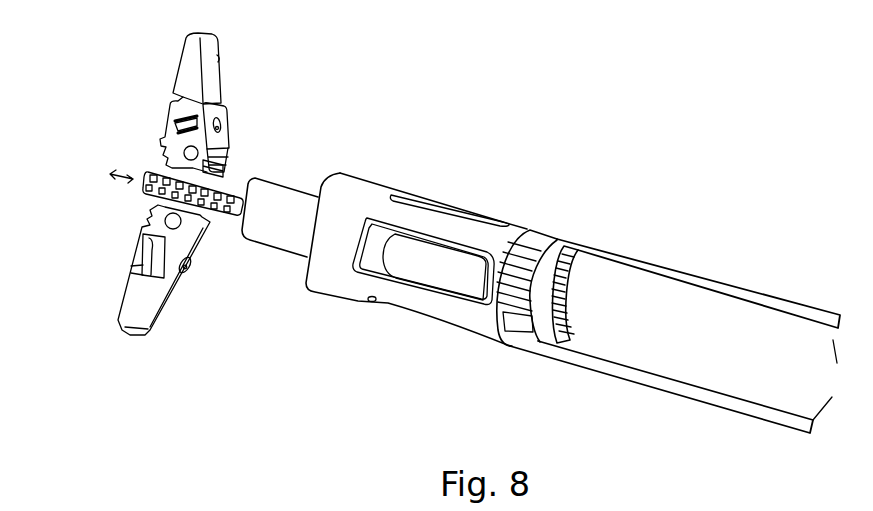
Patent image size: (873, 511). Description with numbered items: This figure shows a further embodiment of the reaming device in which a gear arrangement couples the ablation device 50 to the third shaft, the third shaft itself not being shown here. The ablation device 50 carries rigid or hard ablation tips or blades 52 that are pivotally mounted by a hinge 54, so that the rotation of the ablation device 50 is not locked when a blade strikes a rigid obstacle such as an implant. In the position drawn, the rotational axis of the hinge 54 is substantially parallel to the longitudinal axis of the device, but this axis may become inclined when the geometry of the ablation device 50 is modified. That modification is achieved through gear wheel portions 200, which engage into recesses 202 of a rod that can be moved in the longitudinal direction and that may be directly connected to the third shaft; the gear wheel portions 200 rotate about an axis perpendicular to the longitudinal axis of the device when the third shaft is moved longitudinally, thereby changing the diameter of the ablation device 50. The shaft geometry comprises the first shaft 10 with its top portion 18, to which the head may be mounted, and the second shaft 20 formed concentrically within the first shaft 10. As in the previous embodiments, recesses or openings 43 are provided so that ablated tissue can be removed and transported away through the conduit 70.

The first shaft 10 is at (705, 393).
The top portion 18 is at (527, 347).
The second shaft 20 is at (56, 250).
The recesses or openings 43 is at (452, 252).
The ablation device 50 is at (180, 30).
The ablation tips or blades 52 is at (212, 48).
The hinge 54 is at (233, 122).
The conduit 70 is at (718, 307).
The gear wheel portions 200 is at (197, 167).
The recesses 202 is at (227, 212).